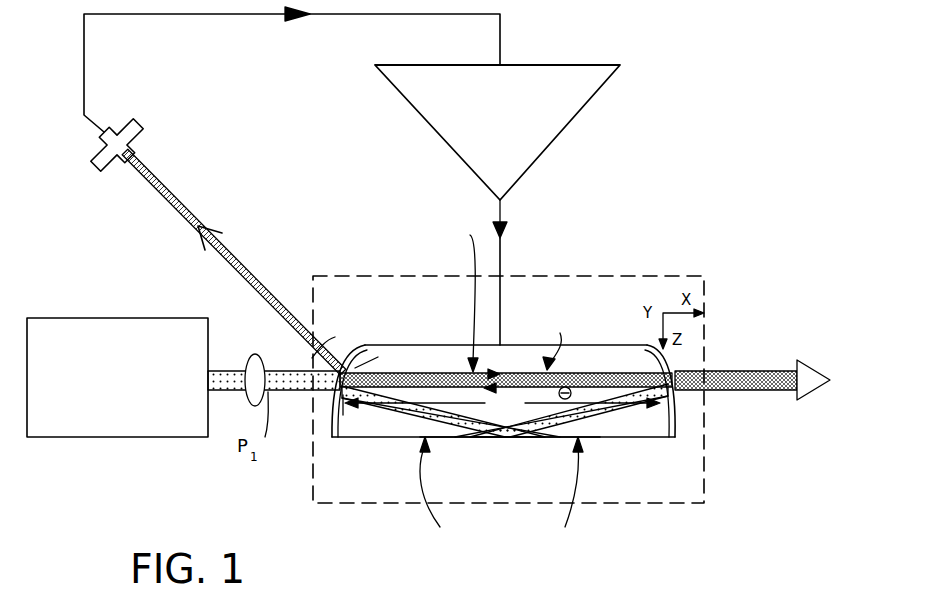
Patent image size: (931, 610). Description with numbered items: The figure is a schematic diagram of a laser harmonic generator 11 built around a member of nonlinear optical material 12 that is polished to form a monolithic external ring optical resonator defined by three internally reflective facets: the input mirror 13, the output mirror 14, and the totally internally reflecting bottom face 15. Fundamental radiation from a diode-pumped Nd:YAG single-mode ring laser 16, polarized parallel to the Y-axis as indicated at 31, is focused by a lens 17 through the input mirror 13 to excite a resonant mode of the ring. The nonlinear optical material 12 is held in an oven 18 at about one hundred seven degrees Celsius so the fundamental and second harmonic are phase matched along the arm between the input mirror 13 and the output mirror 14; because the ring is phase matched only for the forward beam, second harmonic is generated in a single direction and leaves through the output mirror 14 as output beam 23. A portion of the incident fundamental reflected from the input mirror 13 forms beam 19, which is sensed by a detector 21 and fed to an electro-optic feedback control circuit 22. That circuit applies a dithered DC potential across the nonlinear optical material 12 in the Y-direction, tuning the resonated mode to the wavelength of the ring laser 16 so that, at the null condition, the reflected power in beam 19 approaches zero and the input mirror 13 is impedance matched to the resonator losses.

The laser harmonic generator 11 is at (560, 175).
The nonlinear optical material 12 is at (440, 352).
The input mirror 13 is at (330, 430).
The output mirror 14 is at (675, 422).
The totally internally reflecting face 15 is at (622, 440).
The diode-pumped Nd:YAG single-mode ring laser 16 is at (100, 318).
The lens 17 is at (258, 355).
The oven 18 is at (522, 275).
The reflected beam 19 is at (200, 205).
The detector 21 is at (93, 148).
The electro-optic feedback control circuit 22 is at (590, 65).
The output beam 23 is at (718, 368).
The polarization of incident laser radiation 31 is at (297, 401).